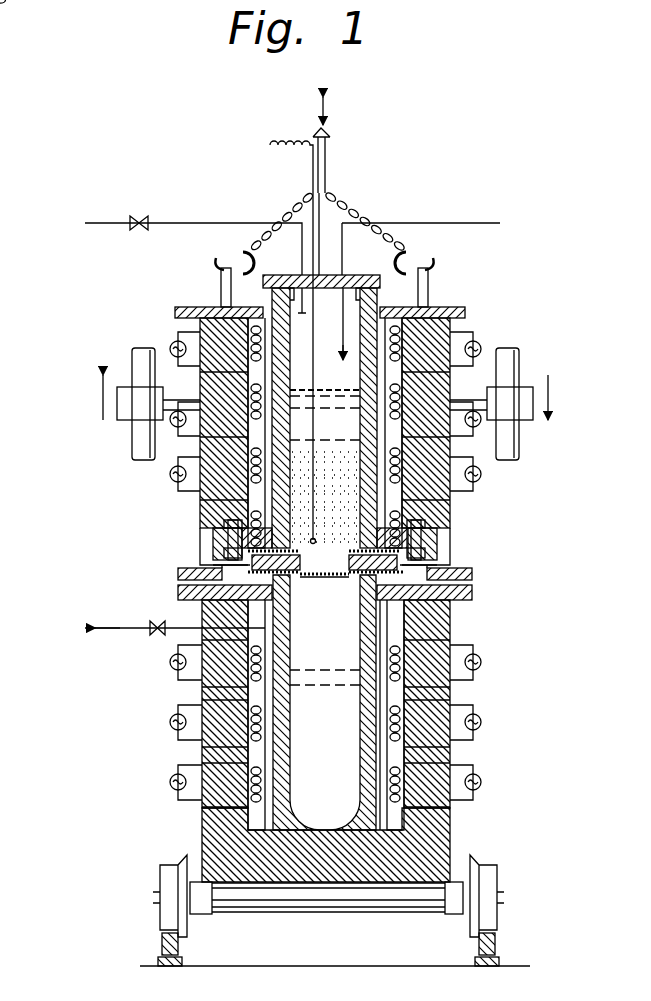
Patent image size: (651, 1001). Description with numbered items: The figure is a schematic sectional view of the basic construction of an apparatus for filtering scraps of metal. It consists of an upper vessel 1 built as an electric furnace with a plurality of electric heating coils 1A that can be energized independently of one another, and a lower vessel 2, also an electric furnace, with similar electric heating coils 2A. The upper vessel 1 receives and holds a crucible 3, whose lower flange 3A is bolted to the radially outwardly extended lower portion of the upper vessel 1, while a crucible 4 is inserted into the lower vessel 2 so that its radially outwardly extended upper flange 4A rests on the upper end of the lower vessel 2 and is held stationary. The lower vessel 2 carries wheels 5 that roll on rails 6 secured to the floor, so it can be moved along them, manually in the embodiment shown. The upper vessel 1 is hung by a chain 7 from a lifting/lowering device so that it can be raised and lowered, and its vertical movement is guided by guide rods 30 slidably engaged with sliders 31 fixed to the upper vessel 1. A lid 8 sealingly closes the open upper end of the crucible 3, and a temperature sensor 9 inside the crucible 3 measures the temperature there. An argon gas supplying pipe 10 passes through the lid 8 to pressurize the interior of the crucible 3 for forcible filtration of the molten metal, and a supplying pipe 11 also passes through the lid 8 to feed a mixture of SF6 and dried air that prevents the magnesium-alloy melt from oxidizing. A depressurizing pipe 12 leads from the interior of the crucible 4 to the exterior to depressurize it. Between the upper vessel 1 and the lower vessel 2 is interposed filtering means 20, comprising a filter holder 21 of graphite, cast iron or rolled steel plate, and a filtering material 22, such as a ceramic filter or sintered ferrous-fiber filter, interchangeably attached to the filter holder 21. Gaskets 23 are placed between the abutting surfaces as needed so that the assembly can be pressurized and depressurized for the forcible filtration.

The upper vessel 1 is at (460, 292).
The electric heating coils 1A is at (484, 326).
The lower vessel 2 is at (465, 632).
The electric heating coils 2A is at (489, 661).
The crucible 3 is at (410, 275).
The lower flange 3A is at (419, 548).
The crucible 4 is at (429, 847).
The upper flange 4A is at (475, 576).
The wheels 5 is at (490, 916).
The rails 6 is at (497, 947).
The chain 7 is at (372, 208).
The lid 8 is at (327, 270).
The temperature sensor 9 is at (310, 540).
The argon gas supplying pipe 10 is at (207, 223).
The supplying pipe 11 is at (430, 223).
The depressurizing pipe 12 is at (132, 628).
The filtering means 20 is at (340, 586).
The filter holder 21 is at (455, 575).
The filtering material 22 is at (302, 585).
The gaskets 23 is at (220, 560).
The guide rods 30 is at (140, 360).
The sliders 31 is at (125, 415).